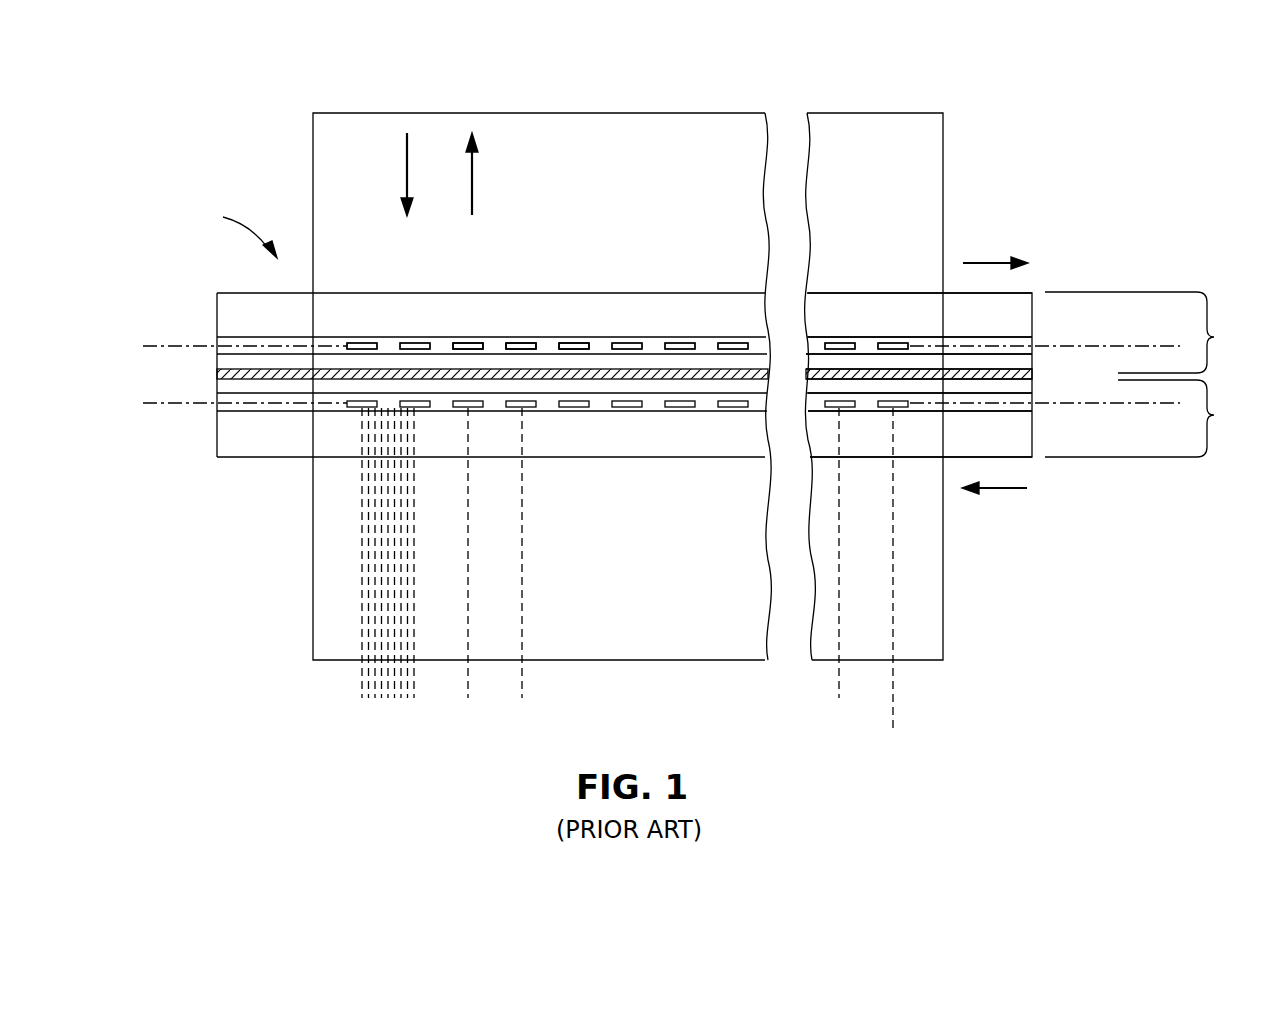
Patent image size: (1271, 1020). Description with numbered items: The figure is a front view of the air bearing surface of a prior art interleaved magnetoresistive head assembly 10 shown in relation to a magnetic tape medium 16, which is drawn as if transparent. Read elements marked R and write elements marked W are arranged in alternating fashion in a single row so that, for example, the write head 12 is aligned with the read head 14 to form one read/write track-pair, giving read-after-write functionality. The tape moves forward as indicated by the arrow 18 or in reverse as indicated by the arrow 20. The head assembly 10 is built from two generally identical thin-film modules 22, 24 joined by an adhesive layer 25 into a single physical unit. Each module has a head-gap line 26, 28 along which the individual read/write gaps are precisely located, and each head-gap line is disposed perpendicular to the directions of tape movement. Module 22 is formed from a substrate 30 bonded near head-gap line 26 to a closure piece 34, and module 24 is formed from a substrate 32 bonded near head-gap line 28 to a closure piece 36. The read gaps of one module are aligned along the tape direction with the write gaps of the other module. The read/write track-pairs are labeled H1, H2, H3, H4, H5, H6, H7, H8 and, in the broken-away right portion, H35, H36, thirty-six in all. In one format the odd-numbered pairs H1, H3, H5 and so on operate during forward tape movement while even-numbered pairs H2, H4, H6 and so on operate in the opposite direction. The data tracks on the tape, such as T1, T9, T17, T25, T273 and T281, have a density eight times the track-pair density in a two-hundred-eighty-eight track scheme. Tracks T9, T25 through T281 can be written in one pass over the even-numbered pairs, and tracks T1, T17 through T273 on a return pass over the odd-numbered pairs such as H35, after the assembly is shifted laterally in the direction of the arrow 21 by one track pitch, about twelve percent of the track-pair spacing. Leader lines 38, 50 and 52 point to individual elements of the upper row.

The interleaved magnetoresistive head assembly 10 is at (232, 228).
The write head 12 is at (347, 345).
The read head 14 is at (347, 407).
The magnetic tape medium 16 is at (434, 112).
The arrow (forward tape direction) 18 is at (405, 155).
The arrow (reverse tape direction) 20 is at (476, 185).
The arrow (lateral head movement direction) 21 is at (981, 263).
The thin-film module 22 is at (1148, 332).
The thin-film module 24 is at (1148, 418).
The adhesive layer 25 is at (217, 375).
The head-gap line 26 is at (148, 345).
The head-gap line 28 is at (148, 403).
The substrate 30 is at (1032, 313).
The substrate 32 is at (1032, 430).
The closure piece 34 is at (1032, 357).
The closure piece 36 is at (1032, 387).
The read element 38 is at (535, 345).
The write element 50 is at (481, 345).
The write element 52 is at (588, 345).
The read/write track-pair H1 is at (362, 307).
The read/write track-pair H2 is at (415, 307).
The read/write track-pair H3 is at (468, 307).
The read/write track-pair H4 is at (521, 307).
The read/write track-pair H5 is at (574, 307).
The read/write track-pair H6 is at (627, 307).
The read/write track-pair H7 is at (681, 307).
The read/write track-pair H8 is at (734, 307).
The read/write track-pair H35 is at (840, 307).
The read/write track-pair H36 is at (896, 307).
The data track T1 is at (362, 567).
The data track T9 is at (399, 567).
The data track T17 is at (469, 567).
The data track T25 is at (522, 567).
The data track T273 is at (838, 567).
The data track T281 is at (894, 584).